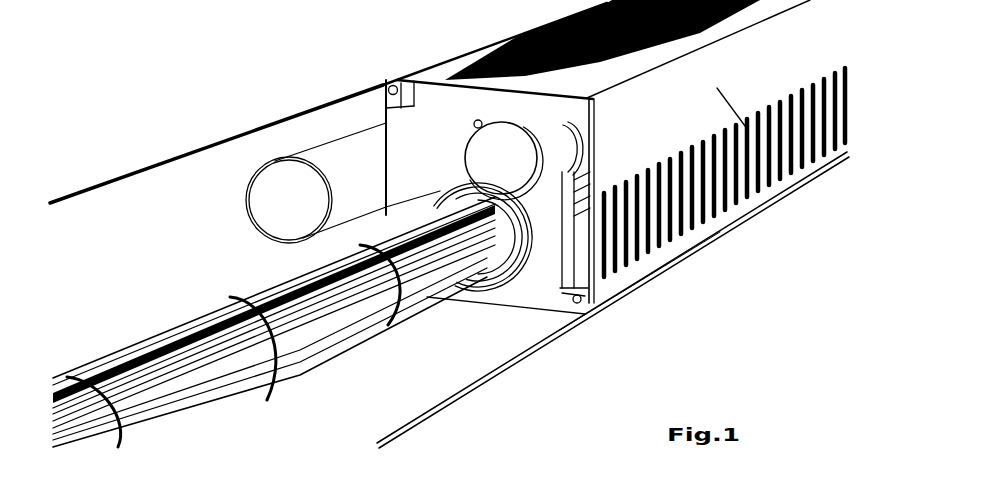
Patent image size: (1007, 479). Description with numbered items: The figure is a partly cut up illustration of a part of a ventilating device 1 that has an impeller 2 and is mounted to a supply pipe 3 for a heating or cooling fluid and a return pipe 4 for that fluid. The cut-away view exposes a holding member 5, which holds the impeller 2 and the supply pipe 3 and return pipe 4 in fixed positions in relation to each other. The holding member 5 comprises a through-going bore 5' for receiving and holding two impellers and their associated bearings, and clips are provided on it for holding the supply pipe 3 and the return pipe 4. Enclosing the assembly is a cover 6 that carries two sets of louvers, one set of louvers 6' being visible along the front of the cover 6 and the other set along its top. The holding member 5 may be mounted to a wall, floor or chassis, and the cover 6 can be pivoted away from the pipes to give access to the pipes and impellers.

The ventilating device 1 is at (354, 69).
The impeller 2 is at (207, 320).
The supply pipe 3 is at (313, 152).
The return pipe 4 is at (490, 162).
The holding member 5 is at (490, 205).
The through-going bore 5' is at (483, 262).
The cover 6 is at (724, 179).
The louvers 6' is at (640, 283).